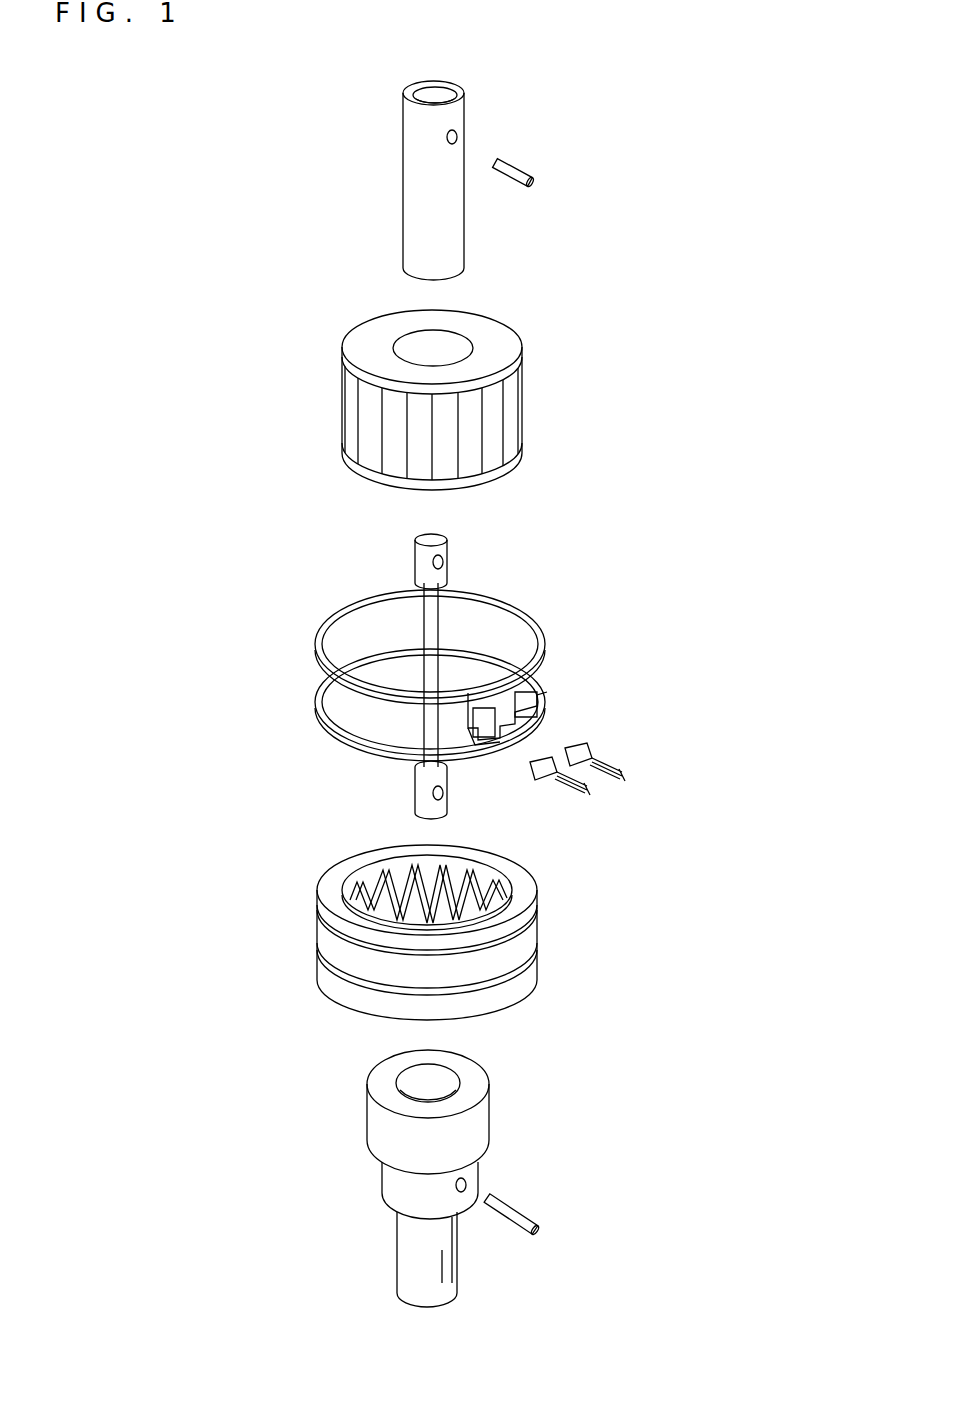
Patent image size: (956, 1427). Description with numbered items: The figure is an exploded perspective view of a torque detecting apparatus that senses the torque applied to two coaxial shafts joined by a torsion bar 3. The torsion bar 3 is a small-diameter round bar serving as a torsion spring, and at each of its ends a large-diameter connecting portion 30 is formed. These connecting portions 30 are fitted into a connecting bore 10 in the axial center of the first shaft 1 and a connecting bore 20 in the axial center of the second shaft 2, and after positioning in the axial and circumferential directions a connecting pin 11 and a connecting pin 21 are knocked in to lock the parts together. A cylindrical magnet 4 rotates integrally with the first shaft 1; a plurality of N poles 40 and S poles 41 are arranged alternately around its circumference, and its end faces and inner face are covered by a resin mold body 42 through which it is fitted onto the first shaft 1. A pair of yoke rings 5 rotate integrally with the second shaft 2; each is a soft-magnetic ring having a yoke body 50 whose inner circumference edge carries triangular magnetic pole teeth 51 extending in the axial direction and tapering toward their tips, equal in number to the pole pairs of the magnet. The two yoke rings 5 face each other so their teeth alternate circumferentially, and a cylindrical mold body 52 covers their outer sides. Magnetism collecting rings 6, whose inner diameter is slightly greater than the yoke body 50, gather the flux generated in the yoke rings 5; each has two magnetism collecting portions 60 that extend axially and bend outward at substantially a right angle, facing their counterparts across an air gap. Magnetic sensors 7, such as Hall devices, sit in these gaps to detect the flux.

The first shaft 1 is at (410, 190).
The connecting bore 10 is at (438, 90).
The connecting pin 11 is at (513, 165).
The second shaft 2 is at (400, 1248).
The connecting bore 20 is at (445, 1083).
The connecting pin 21 is at (527, 1212).
The torsion bar 3 is at (422, 623).
The connecting portion 30 is at (418, 563).
The cylindrical magnet 4 is at (380, 402).
The N pole 40 is at (421, 402).
The S pole 41 is at (440, 473).
The mold body 42 is at (403, 390).
The yoke ring 5 is at (415, 918).
The yoke body 50 is at (318, 933).
The magnetic pole tooth 51 is at (350, 888).
The mold body 52 is at (530, 963).
The magnetism collecting ring 6 is at (315, 645).
The magnetism collecting portion 60 is at (540, 697).
The magnetic sensor 7 is at (537, 757).